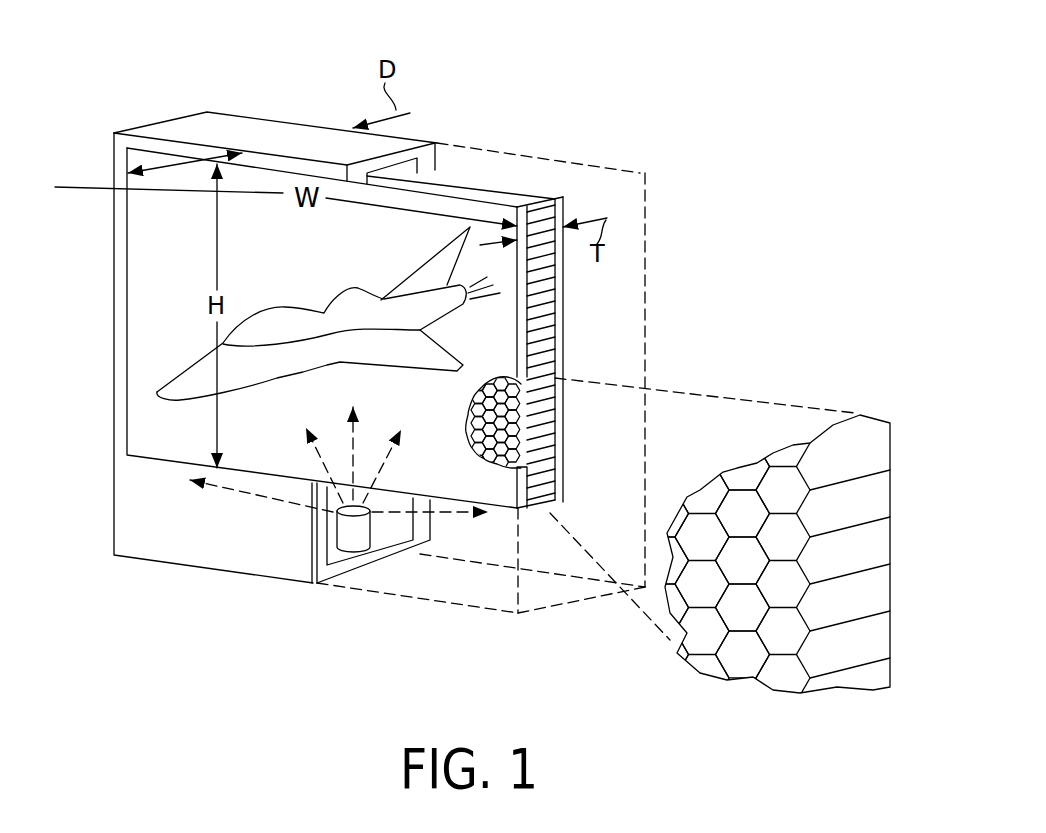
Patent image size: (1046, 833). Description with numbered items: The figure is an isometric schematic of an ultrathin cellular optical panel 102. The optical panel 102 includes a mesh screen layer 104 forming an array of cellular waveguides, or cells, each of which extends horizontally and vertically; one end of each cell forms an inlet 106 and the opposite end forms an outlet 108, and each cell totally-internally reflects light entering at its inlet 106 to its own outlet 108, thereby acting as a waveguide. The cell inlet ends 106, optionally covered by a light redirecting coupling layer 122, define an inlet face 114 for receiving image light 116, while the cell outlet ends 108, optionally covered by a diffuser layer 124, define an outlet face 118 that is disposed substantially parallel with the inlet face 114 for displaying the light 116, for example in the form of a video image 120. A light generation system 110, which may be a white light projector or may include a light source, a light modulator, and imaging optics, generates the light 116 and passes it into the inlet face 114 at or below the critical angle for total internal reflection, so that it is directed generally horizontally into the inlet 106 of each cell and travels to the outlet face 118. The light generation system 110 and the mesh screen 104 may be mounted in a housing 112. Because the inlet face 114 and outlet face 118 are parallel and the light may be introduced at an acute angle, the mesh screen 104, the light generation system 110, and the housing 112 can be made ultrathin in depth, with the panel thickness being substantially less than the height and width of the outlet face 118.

The optical panel 102 is at (590, 99).
The mesh screen layer 104 is at (487, 423).
The inlet 106 is at (893, 423).
The outlet 108 is at (788, 490).
The light generation system 110 is at (337, 538).
The housing 112 is at (246, 111).
The inlet face 114 is at (563, 293).
The light 116 is at (366, 424).
The outlet face 118 is at (180, 252).
The video image 120 is at (279, 308).
The light redirecting coupling layer 122 is at (561, 485).
The diffuser layer 124 is at (523, 506).